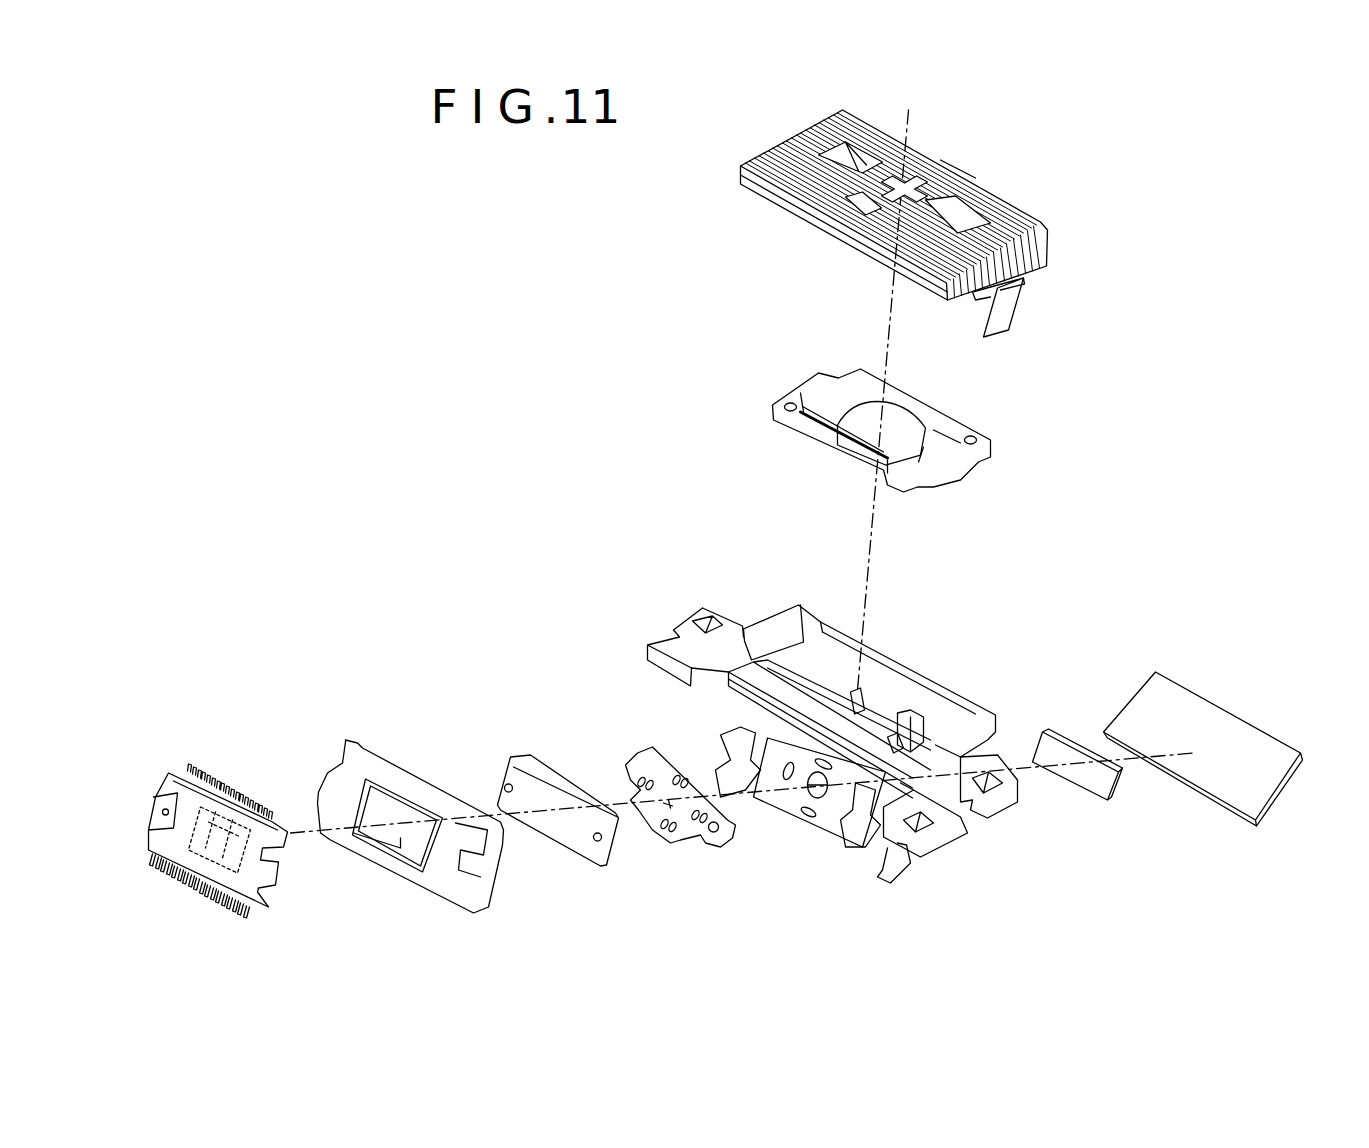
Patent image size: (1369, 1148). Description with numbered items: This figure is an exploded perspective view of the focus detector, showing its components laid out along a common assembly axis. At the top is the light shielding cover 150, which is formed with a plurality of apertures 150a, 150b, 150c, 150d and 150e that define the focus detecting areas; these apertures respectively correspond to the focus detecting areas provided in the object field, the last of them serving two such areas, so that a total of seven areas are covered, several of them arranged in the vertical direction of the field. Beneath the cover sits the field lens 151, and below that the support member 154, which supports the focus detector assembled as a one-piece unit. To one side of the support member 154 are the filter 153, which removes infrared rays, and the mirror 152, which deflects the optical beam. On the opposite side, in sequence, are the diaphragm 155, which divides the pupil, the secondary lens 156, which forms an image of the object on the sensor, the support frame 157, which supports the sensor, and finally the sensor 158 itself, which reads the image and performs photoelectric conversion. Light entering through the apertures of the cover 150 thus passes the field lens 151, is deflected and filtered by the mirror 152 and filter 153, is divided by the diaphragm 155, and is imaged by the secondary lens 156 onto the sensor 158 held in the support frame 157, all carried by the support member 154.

The light shielding cover 150 is at (1047, 280).
The aperture 150a is at (963, 170).
The aperture 150b is at (913, 187).
The aperture 150c is at (857, 203).
The aperture 150d is at (864, 160).
The aperture 150e is at (967, 217).
The field lens 151 is at (993, 447).
The mirror 152 is at (1163, 673).
The filter 153 is at (1053, 730).
The support member 154 is at (980, 693).
The diaphragm 155 is at (640, 750).
The secondary lens 156 is at (545, 757).
The support frame 157 is at (397, 760).
The sensor 158 is at (187, 763).